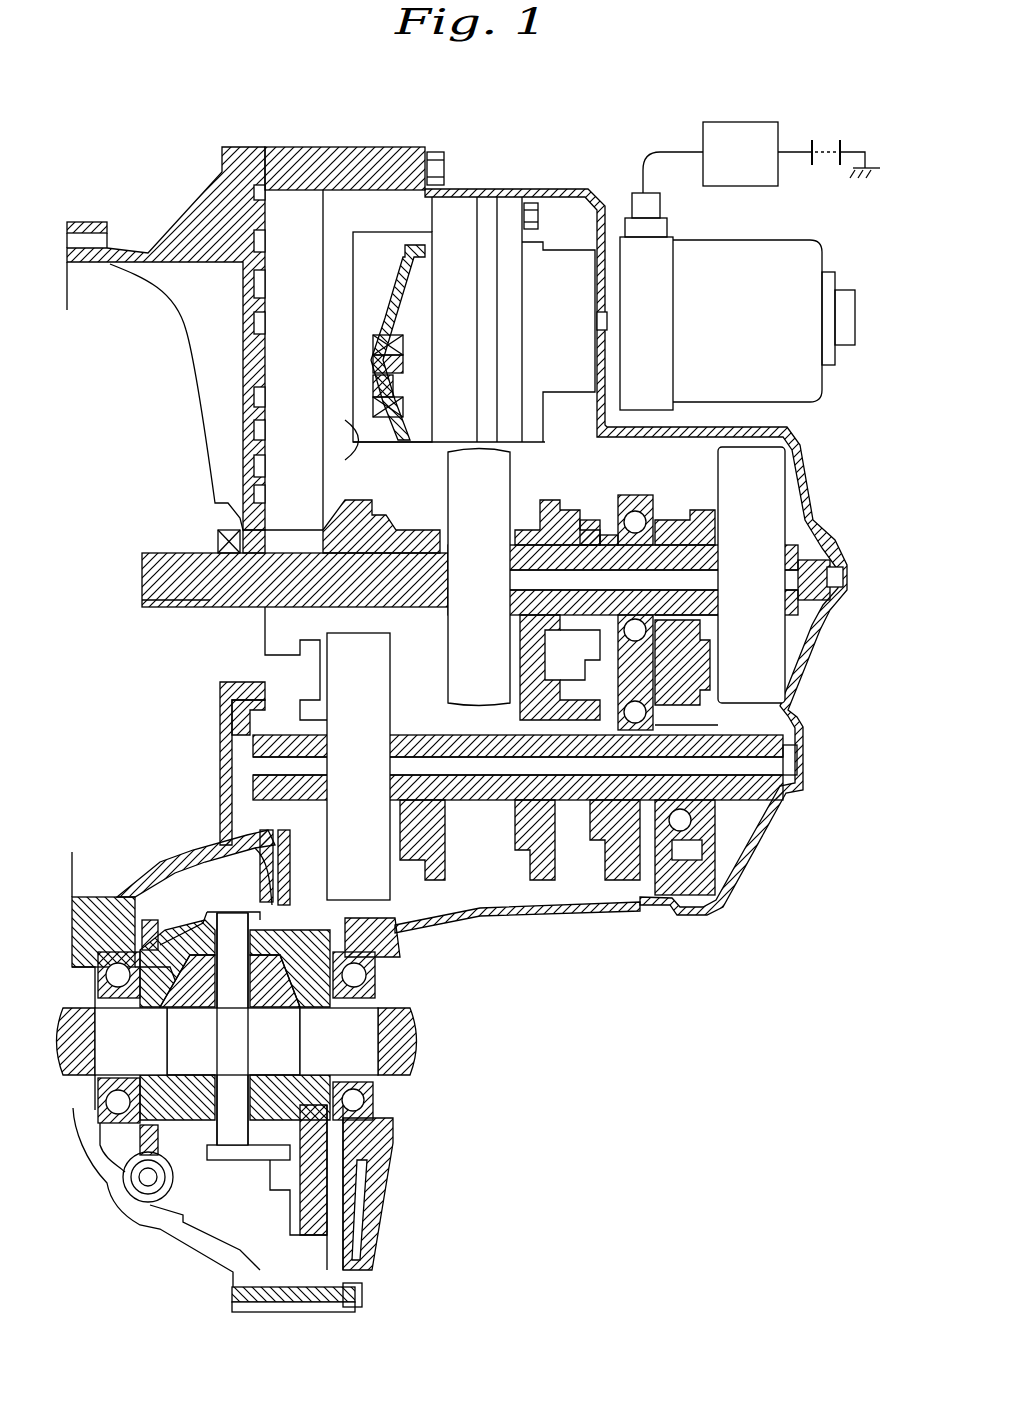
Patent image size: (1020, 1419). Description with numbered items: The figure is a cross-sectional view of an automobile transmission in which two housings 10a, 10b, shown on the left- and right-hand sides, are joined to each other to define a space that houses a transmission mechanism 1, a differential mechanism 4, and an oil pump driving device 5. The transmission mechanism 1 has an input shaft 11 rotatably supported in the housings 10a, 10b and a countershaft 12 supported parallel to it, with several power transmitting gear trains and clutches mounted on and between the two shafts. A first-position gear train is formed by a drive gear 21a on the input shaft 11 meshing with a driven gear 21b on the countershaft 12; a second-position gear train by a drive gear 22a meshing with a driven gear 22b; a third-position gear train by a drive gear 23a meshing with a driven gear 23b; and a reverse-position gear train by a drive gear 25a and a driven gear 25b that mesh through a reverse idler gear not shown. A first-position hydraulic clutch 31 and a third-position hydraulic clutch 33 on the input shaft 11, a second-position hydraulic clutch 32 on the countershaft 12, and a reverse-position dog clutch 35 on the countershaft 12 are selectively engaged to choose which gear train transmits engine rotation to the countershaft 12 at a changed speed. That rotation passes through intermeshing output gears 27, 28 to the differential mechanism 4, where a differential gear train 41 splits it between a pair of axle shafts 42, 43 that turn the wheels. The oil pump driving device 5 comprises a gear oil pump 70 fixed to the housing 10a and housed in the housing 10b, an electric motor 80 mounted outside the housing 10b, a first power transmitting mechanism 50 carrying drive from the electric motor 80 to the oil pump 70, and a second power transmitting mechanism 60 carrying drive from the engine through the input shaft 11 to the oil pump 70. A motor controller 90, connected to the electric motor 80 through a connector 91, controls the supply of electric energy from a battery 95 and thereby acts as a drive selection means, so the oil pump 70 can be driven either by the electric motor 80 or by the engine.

The transmission mechanism 1 is at (483, 860).
The differential mechanism 4 is at (233, 1200).
The oil pump driving device 5 is at (567, 222).
The housing 10a is at (183, 230).
The housing 10b is at (357, 168).
The input shaft 11 is at (160, 590).
The countershaft 12 is at (253, 782).
The drive gear 21a is at (680, 520).
The driven gear 21b is at (677, 905).
The drive gear 22a is at (407, 497).
The driven gear 22b is at (418, 880).
The drive gear 23a is at (535, 500).
The driven gear 23b is at (530, 870).
The drive gear 25a is at (590, 520).
The driven gear 25b is at (615, 880).
The output gear 27 is at (305, 718).
The output gear 28 is at (327, 1252).
The first-position hydraulic clutch 31 is at (768, 589).
The second-position hydraulic clutch 32 is at (375, 781).
The third-position hydraulic clutch 33 is at (496, 589).
The reverse-position dog clutch 35 is at (560, 835).
The differential gear train 41 is at (197, 1127).
The axle shaft 42 is at (148, 1059).
The axle shaft 43 is at (356, 1059).
The first power transmitting mechanism 50 is at (591, 335).
The second power transmitting mechanism 60 is at (380, 318).
The gear oil pump 70 is at (488, 220).
The electric motor 80 is at (767, 337).
The motor controller 90 is at (760, 175).
The connector 91 is at (652, 205).
The battery 95 is at (822, 142).